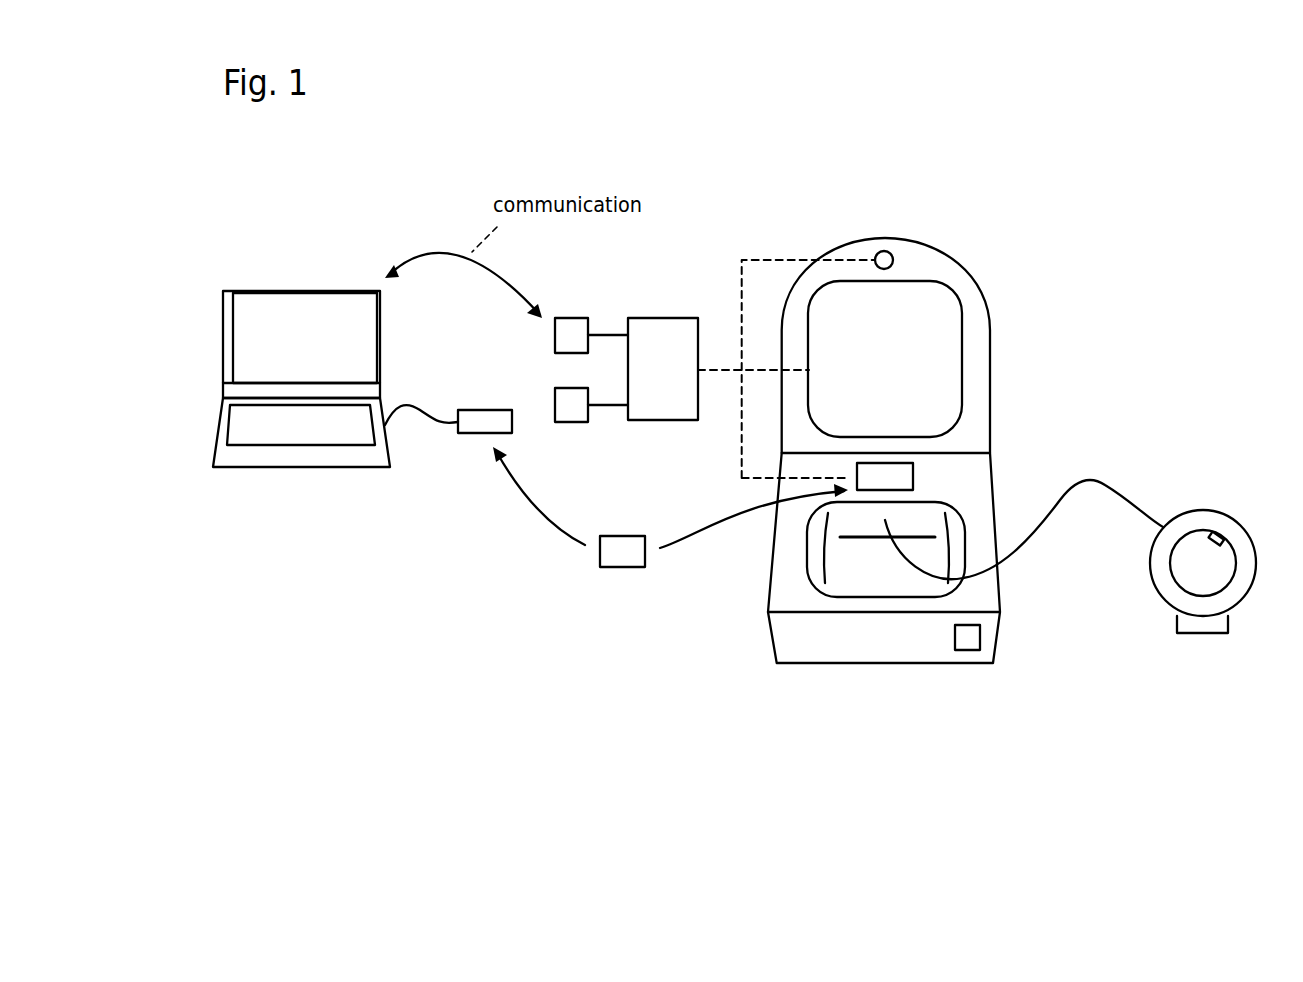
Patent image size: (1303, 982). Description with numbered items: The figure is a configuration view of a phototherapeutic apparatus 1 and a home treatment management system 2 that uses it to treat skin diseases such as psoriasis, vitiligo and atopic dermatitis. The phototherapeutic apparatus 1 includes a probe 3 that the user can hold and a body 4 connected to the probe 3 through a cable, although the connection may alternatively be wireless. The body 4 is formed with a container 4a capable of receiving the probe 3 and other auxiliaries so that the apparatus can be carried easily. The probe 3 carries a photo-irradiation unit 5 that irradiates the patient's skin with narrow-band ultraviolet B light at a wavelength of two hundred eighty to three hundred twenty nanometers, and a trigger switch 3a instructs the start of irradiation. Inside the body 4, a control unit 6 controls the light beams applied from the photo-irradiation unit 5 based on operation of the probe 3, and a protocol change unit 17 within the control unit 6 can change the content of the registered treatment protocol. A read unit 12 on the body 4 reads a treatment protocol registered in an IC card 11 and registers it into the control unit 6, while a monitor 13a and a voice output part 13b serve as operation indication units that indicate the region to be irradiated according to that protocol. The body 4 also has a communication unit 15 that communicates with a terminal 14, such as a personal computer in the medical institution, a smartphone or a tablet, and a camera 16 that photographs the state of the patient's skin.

The phototherapeutic apparatus 1 is at (951, 246).
The home treatment management system 2 is at (762, 144).
The probe 3 is at (1197, 510).
The trigger switch 3a is at (1220, 537).
The body 4 is at (990, 323).
The container 4a is at (863, 570).
The photo-irradiation unit 5 is at (1177, 630).
The control unit 6 is at (665, 318).
The IC card 11 is at (623, 557).
The read unit 12 is at (903, 473).
The monitor 13a is at (947, 377).
The voice output part 13b is at (978, 635).
The terminal 14 is at (332, 467).
The communication unit 15 is at (573, 318).
The camera 16 is at (887, 252).
The protocol change unit 17 is at (573, 422).